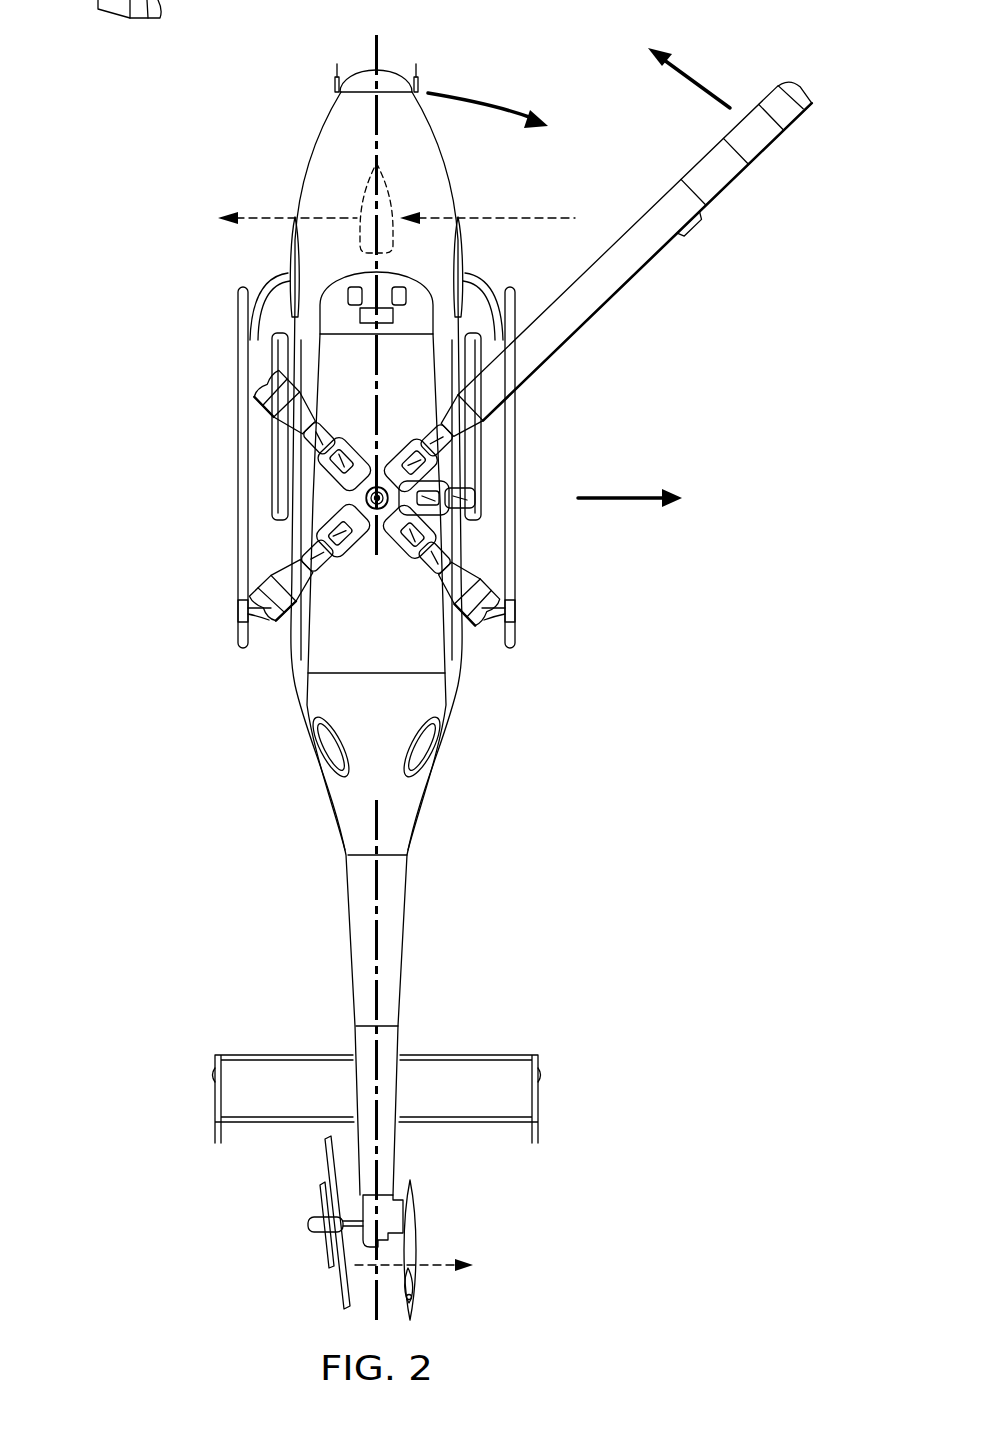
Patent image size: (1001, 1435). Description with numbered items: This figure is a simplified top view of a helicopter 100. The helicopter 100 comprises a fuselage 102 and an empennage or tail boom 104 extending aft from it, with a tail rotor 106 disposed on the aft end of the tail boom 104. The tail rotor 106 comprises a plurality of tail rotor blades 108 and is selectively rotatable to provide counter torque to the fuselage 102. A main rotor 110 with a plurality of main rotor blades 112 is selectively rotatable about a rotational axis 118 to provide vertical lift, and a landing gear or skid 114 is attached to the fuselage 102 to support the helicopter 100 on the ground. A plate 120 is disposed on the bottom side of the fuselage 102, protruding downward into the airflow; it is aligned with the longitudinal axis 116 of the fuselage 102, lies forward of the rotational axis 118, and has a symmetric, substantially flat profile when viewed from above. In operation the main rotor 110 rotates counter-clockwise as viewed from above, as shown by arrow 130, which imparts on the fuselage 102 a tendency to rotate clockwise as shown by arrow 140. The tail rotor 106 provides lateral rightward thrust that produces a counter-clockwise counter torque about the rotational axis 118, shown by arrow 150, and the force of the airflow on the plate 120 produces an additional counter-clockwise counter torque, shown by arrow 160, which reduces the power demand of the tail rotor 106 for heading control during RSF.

The helicopter 100 is at (124, 58).
The fuselage 102 is at (392, 72).
The tail boom 104 is at (406, 936).
The tail rotor 106 is at (297, 1236).
The tail rotor blades 108 is at (327, 1155).
The main rotor 110 is at (357, 561).
The main rotor blades 112 is at (727, 188).
The skid 114 is at (516, 548).
The longitudinal axis 116 is at (373, 882).
The rotational axis 118 is at (372, 497).
The plate 120 is at (388, 185).
The arrow 130 is at (700, 80).
The arrow 140 is at (476, 99).
The arrow 150 is at (442, 1270).
The arrow 160 is at (267, 218).